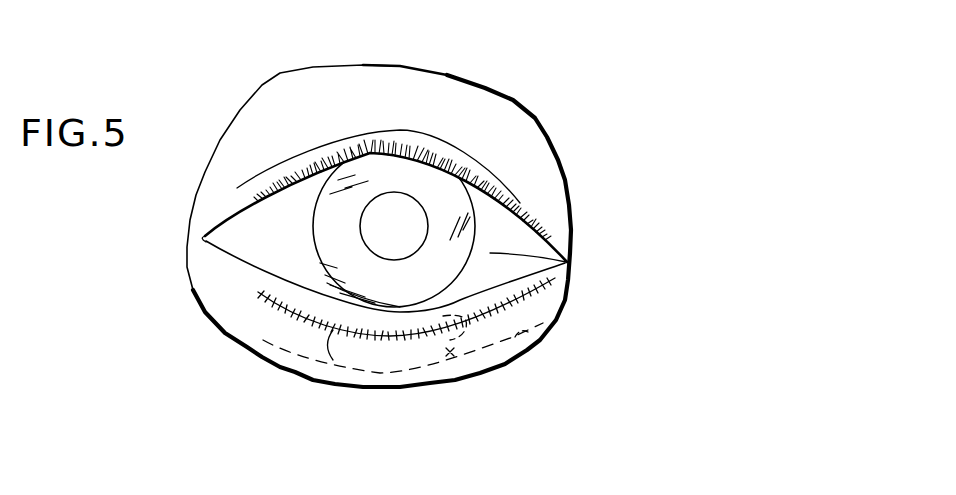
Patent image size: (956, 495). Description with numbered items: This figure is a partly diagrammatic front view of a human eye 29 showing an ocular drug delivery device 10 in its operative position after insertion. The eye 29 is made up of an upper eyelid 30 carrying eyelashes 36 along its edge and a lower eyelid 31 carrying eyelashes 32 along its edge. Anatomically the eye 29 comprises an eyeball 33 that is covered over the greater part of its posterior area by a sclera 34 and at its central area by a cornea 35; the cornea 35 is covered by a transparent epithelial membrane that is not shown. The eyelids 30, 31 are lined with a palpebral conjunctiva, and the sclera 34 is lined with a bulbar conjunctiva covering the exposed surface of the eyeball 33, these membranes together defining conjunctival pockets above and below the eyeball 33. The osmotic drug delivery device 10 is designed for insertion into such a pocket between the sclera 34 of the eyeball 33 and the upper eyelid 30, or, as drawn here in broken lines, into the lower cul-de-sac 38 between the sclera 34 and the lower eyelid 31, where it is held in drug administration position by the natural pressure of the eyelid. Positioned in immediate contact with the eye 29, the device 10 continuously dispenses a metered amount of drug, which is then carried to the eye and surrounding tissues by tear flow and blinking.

The ocular drug delivery device 10 is at (455, 365).
The eye 29 is at (556, 128).
The upper eyelid 30 is at (290, 167).
The lower eyelid 31 is at (379, 321).
The eyelashes 32 is at (303, 323).
The eyeball 33 is at (264, 320).
The sclera 34 is at (570, 272).
The cornea 35 is at (420, 183).
The eyelashes 36 is at (373, 152).
The lower cul-de-sac 38 is at (528, 335).